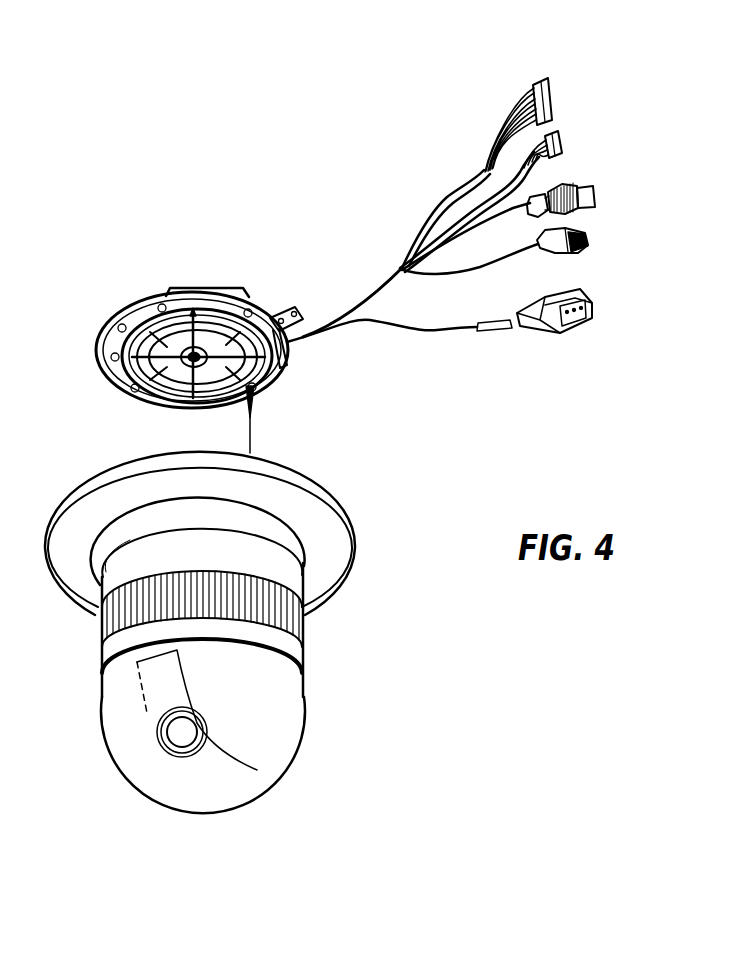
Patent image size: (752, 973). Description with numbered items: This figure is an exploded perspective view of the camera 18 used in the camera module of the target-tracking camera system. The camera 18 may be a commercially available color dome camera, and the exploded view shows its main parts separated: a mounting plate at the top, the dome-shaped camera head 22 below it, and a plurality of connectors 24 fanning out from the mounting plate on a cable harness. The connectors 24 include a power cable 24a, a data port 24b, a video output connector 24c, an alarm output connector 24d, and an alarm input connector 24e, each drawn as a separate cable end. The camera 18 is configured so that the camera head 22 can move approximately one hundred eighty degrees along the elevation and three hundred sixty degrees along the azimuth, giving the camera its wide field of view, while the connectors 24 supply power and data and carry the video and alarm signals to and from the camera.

The camera 18 is at (224, 269).
The camera head 22 is at (180, 735).
The connectors 24 is at (547, 57).
The power cable 24a is at (585, 311).
The data port 24b is at (587, 243).
The video output connector 24c is at (597, 194).
The alarm output connector 24d is at (563, 143).
The alarm input connector 24e is at (553, 102).